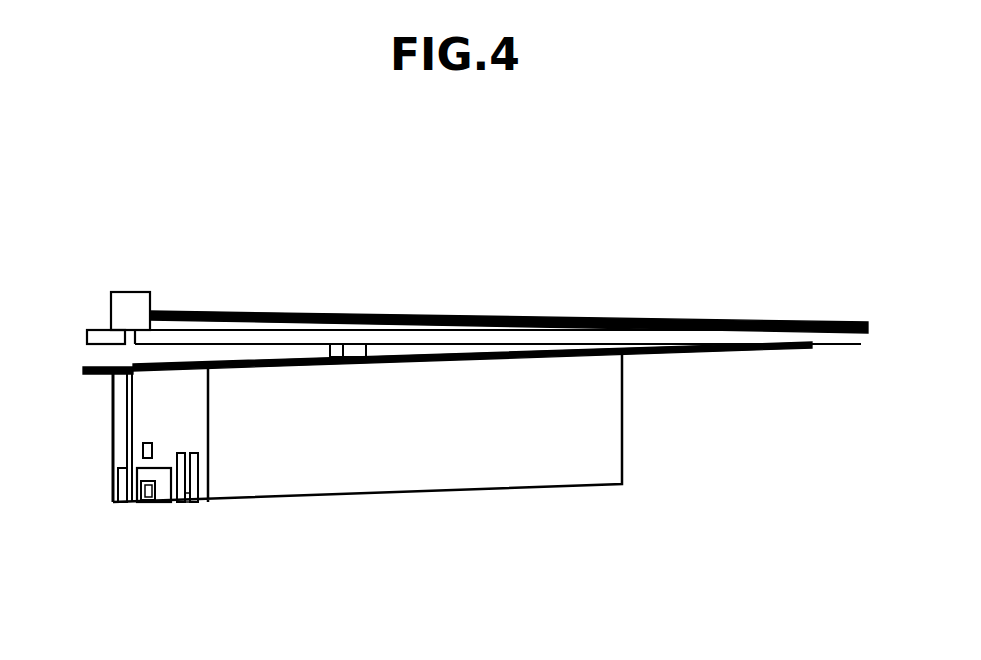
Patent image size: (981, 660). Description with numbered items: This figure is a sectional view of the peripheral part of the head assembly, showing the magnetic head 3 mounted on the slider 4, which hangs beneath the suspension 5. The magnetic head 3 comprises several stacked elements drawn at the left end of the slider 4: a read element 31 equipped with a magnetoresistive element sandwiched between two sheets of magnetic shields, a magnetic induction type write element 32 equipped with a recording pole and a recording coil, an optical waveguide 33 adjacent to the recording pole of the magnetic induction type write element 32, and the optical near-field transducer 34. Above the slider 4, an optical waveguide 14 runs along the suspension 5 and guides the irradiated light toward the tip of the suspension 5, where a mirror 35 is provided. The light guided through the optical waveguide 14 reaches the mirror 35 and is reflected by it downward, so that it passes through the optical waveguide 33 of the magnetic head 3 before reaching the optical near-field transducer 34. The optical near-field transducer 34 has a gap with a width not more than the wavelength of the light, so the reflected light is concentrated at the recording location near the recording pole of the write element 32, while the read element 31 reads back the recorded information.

The magnetic head 3 is at (160, 483).
The slider 4 is at (565, 448).
The suspension 5 is at (491, 340).
The optical waveguide 14 is at (347, 313).
The read element 31 is at (187, 503).
The magnetic induction type write element 32 is at (148, 503).
The optical waveguide 33 is at (130, 423).
The optical near-field transducer 34 is at (130, 503).
The mirror 35 is at (130, 308).